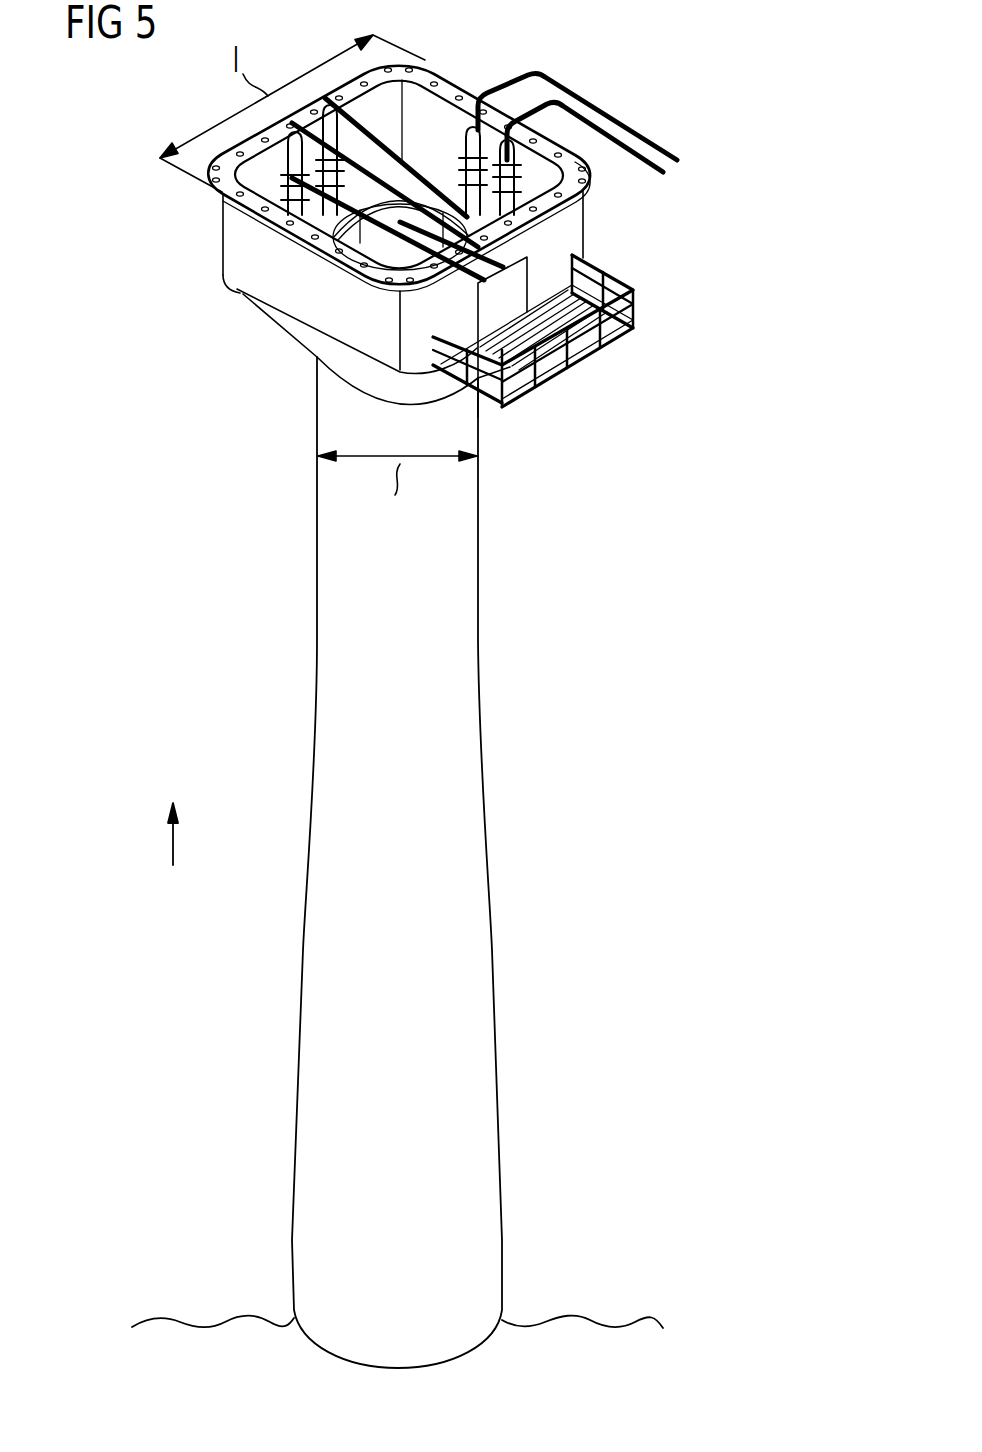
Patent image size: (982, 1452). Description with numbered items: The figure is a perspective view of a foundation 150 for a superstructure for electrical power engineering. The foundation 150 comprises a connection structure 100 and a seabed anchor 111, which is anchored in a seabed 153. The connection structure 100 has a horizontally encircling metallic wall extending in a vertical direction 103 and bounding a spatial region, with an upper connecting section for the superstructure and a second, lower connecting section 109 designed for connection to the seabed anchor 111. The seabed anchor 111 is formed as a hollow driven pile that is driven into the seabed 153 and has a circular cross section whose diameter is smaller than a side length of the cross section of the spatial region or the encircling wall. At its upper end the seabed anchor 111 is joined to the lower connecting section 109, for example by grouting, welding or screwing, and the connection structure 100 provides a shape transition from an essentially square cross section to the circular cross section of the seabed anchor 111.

The connection structure 100 is at (166, 251).
The vertical direction 103 is at (175, 845).
The lower connecting section 109 is at (268, 366).
The seabed anchor 111 is at (525, 837).
The foundation 150 is at (677, 107).
The seabed 153 is at (600, 1318).